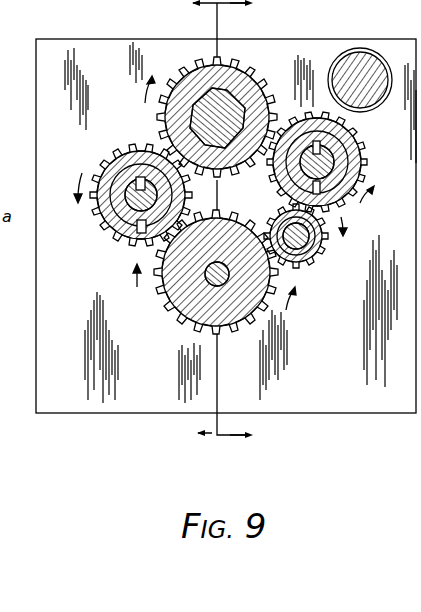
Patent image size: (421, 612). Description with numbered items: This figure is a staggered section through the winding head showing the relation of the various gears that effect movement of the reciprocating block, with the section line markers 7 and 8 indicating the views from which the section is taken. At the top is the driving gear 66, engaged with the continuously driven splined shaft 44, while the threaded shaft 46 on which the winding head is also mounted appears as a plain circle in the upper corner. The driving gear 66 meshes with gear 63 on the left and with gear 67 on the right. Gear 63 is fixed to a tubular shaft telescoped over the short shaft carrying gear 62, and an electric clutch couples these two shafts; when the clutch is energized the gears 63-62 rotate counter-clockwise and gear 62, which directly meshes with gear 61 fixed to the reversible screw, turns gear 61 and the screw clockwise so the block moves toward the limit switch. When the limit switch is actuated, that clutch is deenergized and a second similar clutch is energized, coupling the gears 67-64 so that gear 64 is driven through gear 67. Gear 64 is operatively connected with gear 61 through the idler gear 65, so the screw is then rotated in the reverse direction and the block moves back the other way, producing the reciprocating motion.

The splined shaft 44 is at (260, 82).
The threaded shaft 46 is at (383, 22).
The gear 61 is at (244, 327).
The gear 62 is at (103, 221).
The gear 63 is at (120, 203).
The gears 63-62 is at (120, 203).
The gear 64 is at (346, 198).
The idler gear 65 is at (303, 268).
The driving gear 66 is at (203, 63).
The gear 67 is at (338, 168).
The gears 67-64 is at (338, 168).
The section line 7- 7 is at (215, 222).
The section line 8- 8 is at (248, 223).